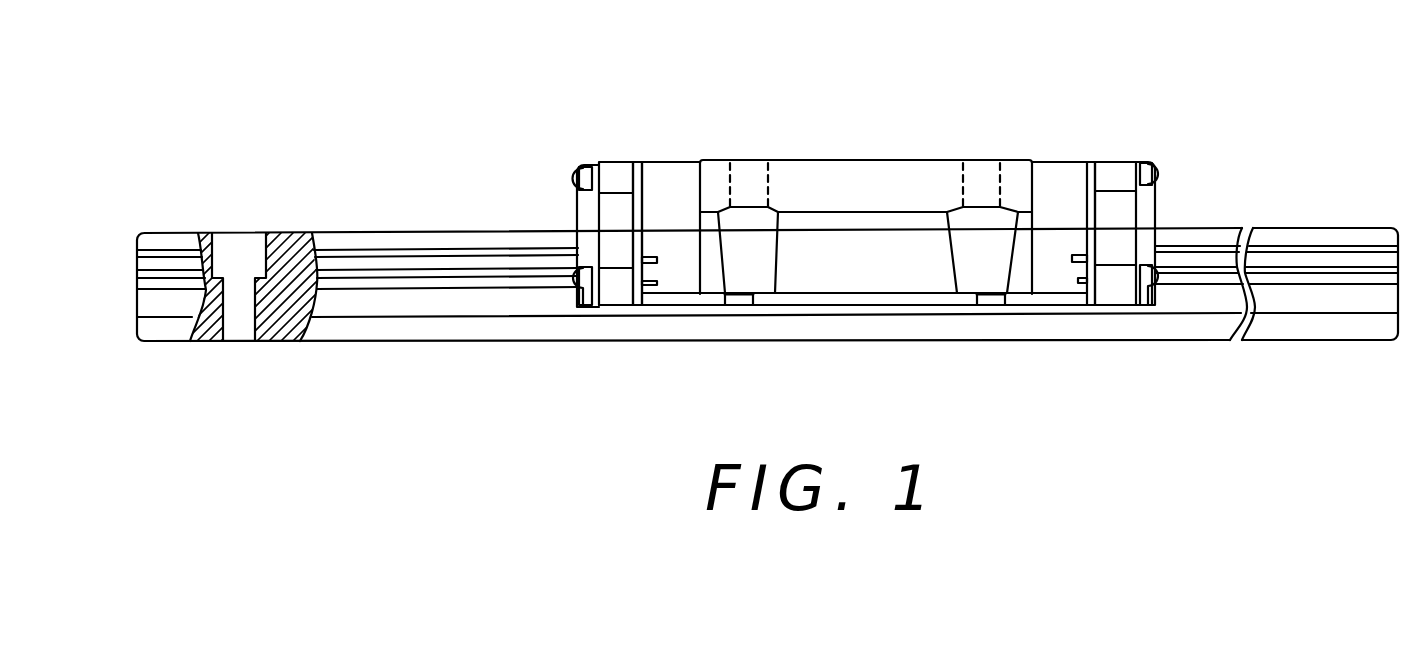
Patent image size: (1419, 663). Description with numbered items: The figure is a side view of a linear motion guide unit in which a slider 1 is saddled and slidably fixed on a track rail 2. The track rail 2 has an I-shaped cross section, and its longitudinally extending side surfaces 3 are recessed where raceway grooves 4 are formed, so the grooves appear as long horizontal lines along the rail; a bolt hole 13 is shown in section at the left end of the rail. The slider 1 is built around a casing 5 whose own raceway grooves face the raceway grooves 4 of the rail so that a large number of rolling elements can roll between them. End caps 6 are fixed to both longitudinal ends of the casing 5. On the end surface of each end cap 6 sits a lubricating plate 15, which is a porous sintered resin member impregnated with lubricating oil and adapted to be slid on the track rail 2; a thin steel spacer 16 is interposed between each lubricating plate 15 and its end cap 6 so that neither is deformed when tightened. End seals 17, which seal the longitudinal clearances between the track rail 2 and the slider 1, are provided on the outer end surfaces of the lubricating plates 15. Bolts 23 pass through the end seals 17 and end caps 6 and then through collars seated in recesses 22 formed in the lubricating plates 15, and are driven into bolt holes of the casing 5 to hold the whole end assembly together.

The slider 1 is at (983, 152).
The track rail 2 is at (372, 240).
The side surfaces 3 is at (417, 310).
The raceway grooves 4 is at (439, 263).
The casing 5 is at (848, 185).
The end caps 6 is at (668, 190).
The bolt hole 13 is at (248, 317).
The lubricating plates 15 is at (620, 245).
The spacers 16 is at (638, 190).
The end seals 17 is at (585, 212).
The recesses 22 is at (620, 175).
The bolts 23 is at (584, 170).